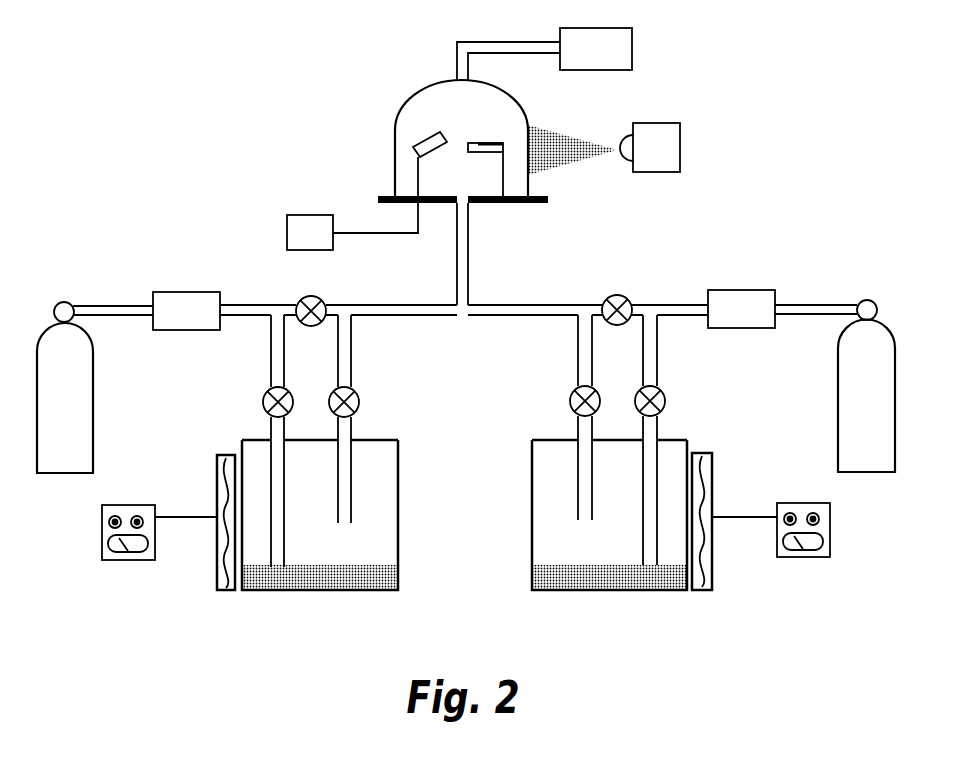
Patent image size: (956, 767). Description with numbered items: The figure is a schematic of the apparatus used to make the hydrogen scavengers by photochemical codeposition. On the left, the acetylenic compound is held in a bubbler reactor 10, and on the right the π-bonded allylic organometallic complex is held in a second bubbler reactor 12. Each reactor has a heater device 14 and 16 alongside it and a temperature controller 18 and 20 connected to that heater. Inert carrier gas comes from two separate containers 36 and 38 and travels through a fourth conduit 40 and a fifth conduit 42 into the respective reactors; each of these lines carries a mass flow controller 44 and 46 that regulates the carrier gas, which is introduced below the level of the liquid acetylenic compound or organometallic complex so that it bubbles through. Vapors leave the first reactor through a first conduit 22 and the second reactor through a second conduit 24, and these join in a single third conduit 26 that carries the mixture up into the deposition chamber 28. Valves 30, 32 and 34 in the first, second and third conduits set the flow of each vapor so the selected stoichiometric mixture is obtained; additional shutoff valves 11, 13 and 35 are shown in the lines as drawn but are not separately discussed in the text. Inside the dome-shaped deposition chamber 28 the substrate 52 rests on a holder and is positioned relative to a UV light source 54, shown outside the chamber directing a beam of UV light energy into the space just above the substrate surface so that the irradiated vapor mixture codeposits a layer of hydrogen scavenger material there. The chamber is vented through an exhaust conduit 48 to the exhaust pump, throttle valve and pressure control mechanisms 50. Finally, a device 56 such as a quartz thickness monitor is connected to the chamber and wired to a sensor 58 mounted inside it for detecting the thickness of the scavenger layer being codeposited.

The bubbler reactor 10 is at (303, 547).
The valve 11 is at (262, 406).
The second bubbler reactor 12 is at (601, 547).
The valve 13 is at (667, 397).
The heater device 14 is at (215, 474).
The heater device 16 is at (715, 480).
The temperature controller 18 is at (100, 540).
The temperature controller 20 is at (835, 535).
The first conduit 22 is at (353, 364).
The second conduit 24 is at (577, 365).
The third conduit 26 is at (470, 266).
The deposition chamber 28 is at (449, 112).
The valve 30 is at (361, 404).
The valve 32 is at (568, 410).
The valve 34 is at (318, 296).
The valve 35 is at (595, 268).
The container for inert carrier gas 36 is at (53, 412).
The container for inert carrier gas 38 is at (855, 412).
The fourth conduit 40 is at (132, 274).
The fifth conduit 42 is at (835, 274).
The mass flow controller 44 is at (204, 258).
The mass flow controller 46 is at (707, 248).
The exhaust conduit 48 is at (529, 42).
The exhaust pump, throttle valve and pressure control mechanisms 50 is at (584, 62).
The substrate 52 is at (500, 143).
The UV light source 54 is at (681, 153).
The device 56 is at (313, 213).
The sensor 58 is at (422, 137).